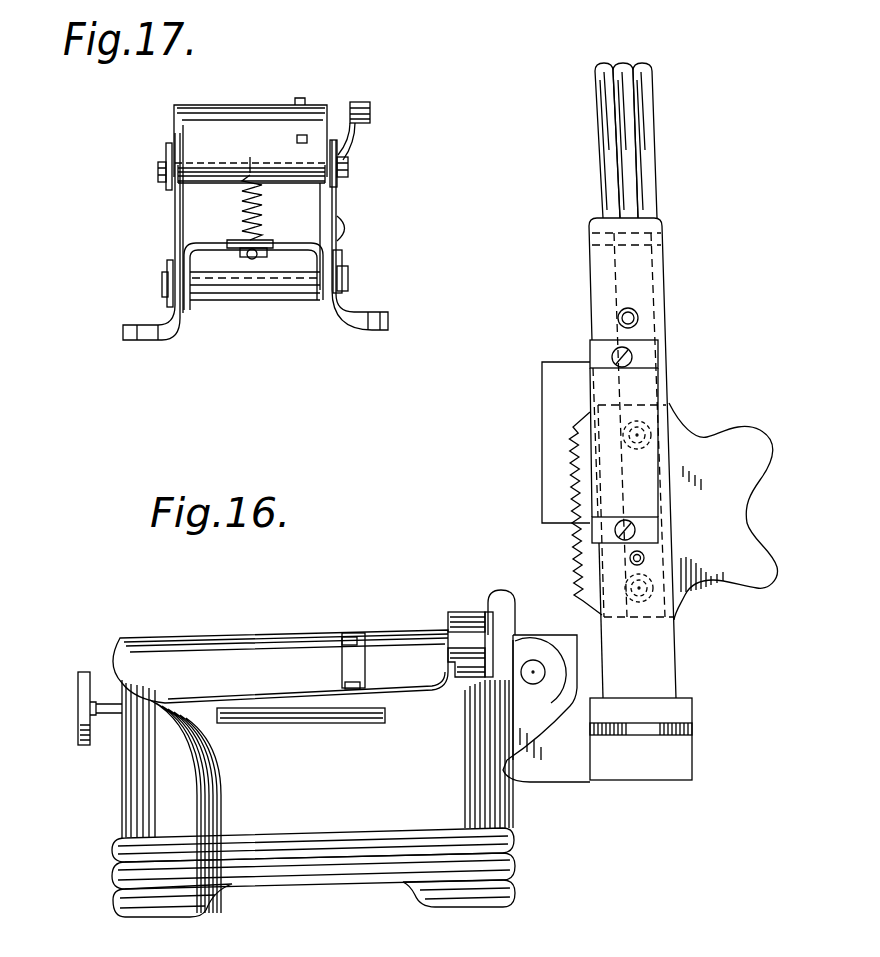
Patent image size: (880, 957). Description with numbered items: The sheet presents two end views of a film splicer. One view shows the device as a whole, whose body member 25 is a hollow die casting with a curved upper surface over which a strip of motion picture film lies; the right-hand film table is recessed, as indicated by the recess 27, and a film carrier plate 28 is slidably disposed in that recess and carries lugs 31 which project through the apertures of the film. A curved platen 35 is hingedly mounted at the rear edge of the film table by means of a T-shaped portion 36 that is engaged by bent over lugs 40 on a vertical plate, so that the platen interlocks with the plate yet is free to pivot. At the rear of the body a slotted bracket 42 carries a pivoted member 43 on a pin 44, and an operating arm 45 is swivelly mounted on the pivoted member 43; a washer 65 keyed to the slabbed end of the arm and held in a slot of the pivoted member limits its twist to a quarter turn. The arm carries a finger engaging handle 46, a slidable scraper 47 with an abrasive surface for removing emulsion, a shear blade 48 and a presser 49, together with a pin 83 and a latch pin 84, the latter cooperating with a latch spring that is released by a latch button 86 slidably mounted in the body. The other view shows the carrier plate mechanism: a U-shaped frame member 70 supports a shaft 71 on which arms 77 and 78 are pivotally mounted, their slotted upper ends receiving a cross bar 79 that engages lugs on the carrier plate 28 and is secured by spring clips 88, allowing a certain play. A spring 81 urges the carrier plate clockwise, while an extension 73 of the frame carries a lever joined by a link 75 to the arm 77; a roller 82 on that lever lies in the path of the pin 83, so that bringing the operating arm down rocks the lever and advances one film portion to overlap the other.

In FIG. 16, the body member 25 is at (368, 794).
In FIG. 16, the recess 27 is at (300, 713).
In FIG. 17, the film carrier plate 28 is at (175, 115).
In FIG. 17, the lugs 31 is at (297, 139).
In FIG. 16, the lugs 31 is at (351, 684).
In FIG. 16, the platen 35 is at (243, 640).
In FIG. 16, the T-shaped portion 36 is at (470, 641).
In FIG. 16, the bent over lugs 40 is at (465, 612).
In FIG. 16, the slotted bracket 42 is at (558, 640).
In FIG. 16, the pivoted member 43 is at (625, 770).
In FIG. 16, the pin 44 is at (545, 672).
In FIG. 16, the operating arm 45 is at (590, 281).
In FIG. 16, the finger engaging handle 46 is at (641, 103).
In FIG. 16, the slidable scraper 47 is at (705, 450).
In FIG. 16, the shear blade 48 is at (548, 392).
In FIG. 16, the presser 49 is at (640, 388).
In FIG. 16, the washer 65 is at (693, 727).
In FIG. 17, the U-shaped frame member 70 is at (223, 228).
In FIG. 17, the shaft 71 is at (262, 291).
In FIG. 17, the extension 73 is at (318, 205).
In FIG. 17, the link 75 is at (348, 256).
In FIG. 17, the arm 77 is at (175, 226).
In FIG. 17, the arm 78 is at (337, 205).
In FIG. 17, the cross bar 79 is at (348, 167).
In FIG. 17, the spring 81 is at (242, 193).
In FIG. 17, the roller 82 is at (362, 105).
In FIG. 16, the pin 83 is at (646, 557).
In FIG. 16, the latch pin 84 is at (618, 318).
In FIG. 16, the latch button 86 is at (78, 681).
In FIG. 17, the spring clips 88 is at (344, 183).